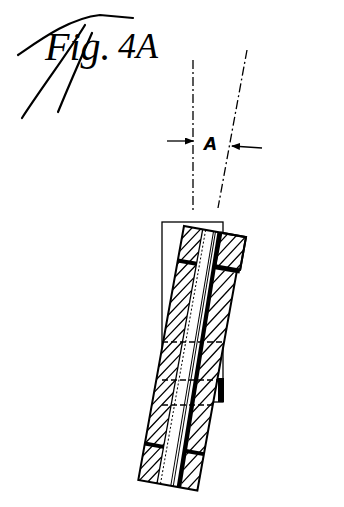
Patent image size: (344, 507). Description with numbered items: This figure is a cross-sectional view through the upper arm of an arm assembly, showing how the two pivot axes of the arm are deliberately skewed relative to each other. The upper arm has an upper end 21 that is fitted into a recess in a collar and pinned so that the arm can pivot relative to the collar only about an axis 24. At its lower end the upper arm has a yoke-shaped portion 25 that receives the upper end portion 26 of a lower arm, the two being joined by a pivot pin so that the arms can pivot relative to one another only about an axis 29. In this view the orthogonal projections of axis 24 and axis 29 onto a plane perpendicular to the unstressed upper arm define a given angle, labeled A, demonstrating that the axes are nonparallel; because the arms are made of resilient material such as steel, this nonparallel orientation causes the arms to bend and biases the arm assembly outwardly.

The upper end 21 is at (163, 312).
The axis 24 is at (160, 136).
The yoke-shaped portion 25 is at (256, 253).
The upper end portion 26 is at (167, 358).
The axis 29 is at (253, 129).